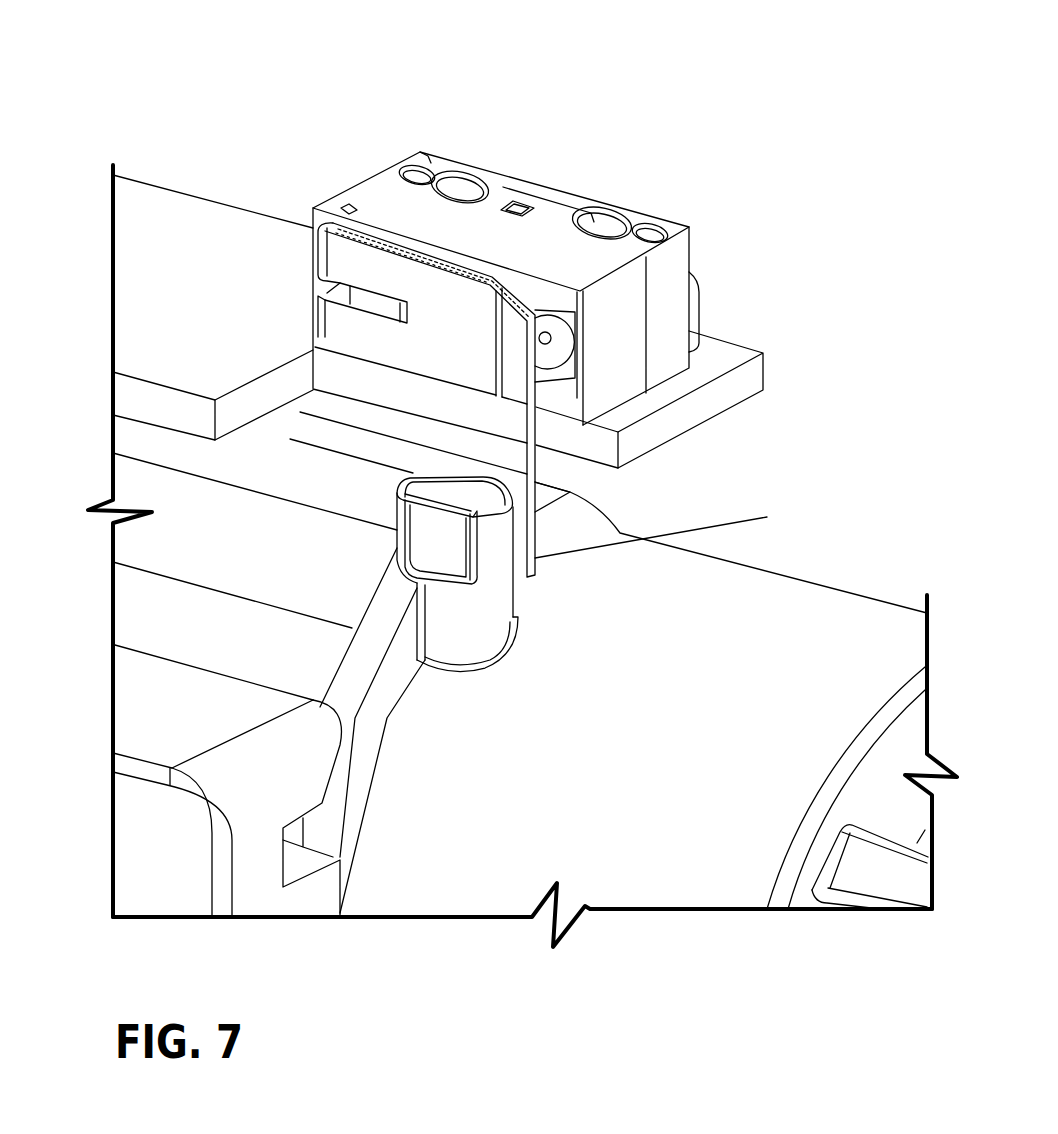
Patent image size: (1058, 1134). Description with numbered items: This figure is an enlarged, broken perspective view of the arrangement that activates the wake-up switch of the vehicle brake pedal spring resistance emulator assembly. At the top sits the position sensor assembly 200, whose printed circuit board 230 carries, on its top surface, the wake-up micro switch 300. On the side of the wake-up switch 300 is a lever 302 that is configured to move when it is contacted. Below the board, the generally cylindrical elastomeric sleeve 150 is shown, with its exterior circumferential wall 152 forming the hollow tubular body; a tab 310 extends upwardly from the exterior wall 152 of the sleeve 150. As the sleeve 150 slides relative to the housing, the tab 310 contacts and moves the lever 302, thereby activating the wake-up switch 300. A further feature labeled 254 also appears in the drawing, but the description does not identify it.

The position sensor assembly 200 is at (564, 297).
The printed circuit board 230 is at (230, 238).
The wake-up micro switch 300 is at (670, 283).
The lever 302 is at (513, 473).
The tab 310 is at (505, 602).
The support surface 254 is at (315, 475).
The sleeve 150 is at (743, 627).
The exterior circumferential wall 152 is at (889, 716).